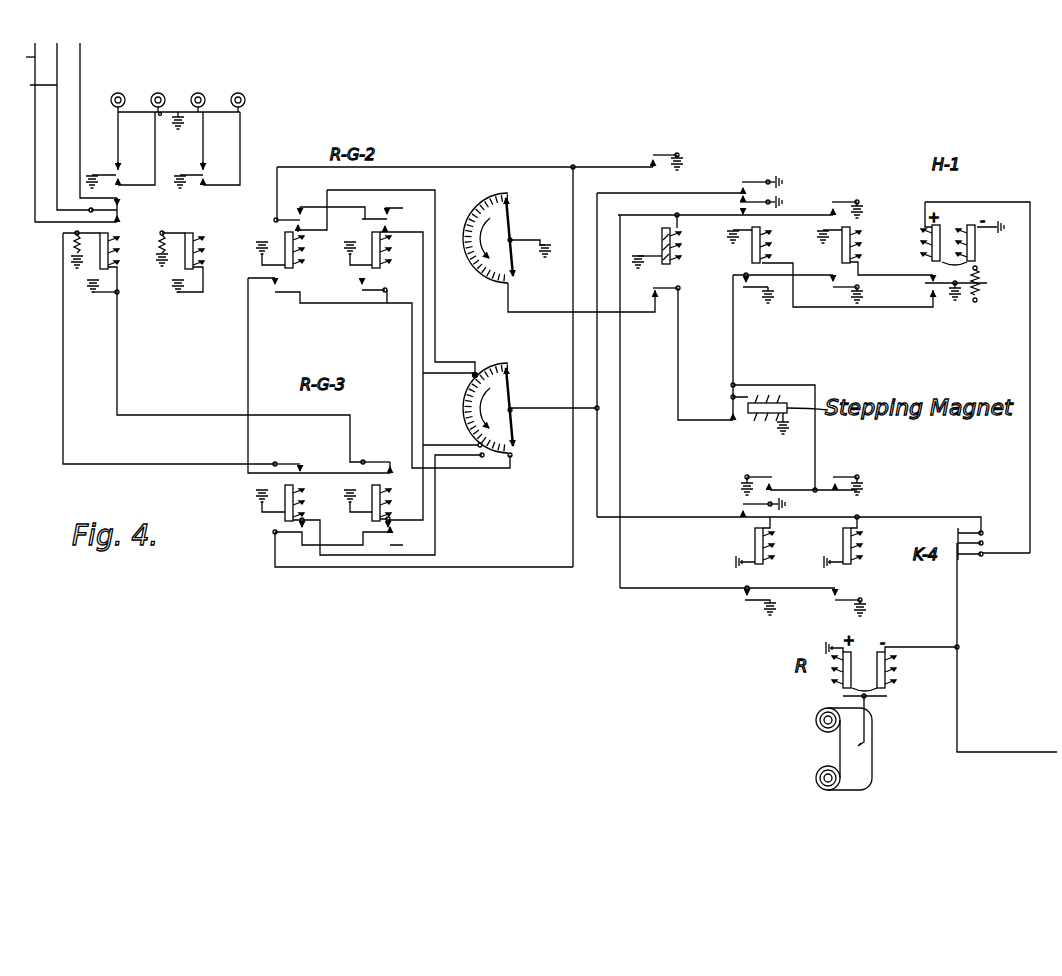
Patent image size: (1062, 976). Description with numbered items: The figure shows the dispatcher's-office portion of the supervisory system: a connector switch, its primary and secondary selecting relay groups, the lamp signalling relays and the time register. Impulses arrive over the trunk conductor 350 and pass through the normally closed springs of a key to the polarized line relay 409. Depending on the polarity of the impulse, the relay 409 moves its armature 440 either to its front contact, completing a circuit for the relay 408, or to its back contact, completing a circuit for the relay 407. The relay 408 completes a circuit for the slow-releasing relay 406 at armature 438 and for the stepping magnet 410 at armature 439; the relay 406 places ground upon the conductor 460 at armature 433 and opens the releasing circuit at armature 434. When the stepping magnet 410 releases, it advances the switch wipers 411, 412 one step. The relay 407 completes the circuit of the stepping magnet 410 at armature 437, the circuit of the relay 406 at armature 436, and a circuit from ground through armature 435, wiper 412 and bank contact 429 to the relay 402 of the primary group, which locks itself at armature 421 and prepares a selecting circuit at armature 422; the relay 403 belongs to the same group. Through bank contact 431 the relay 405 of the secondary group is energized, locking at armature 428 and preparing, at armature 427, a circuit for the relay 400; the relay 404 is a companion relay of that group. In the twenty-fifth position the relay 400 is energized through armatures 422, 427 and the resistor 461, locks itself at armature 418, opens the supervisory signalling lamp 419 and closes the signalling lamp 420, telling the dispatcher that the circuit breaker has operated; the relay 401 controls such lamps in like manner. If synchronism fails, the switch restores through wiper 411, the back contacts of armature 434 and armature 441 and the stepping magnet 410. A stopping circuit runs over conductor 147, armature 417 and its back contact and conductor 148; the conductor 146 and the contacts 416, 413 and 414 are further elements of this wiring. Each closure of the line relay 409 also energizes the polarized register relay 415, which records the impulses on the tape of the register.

The conductor 146 is at (58, 132).
The conductor 147 is at (47, 127).
The conductor 148 is at (82, 78).
The supervisory signalling lamp 419 is at (128, 88).
The signalling lamp 420 is at (194, 95).
The switch contact 416 is at (93, 173).
The armature 417 is at (118, 211).
The resistor 461 is at (73, 240).
The lamp signalling relay 400 is at (93, 278).
The armature 418 is at (112, 296).
The lamp signalling relay 401 is at (196, 232).
The relay 402 is at (282, 232).
The relay 403 is at (370, 238).
The armature 421 is at (297, 216).
The armature 422 is at (360, 284).
The conductor 460 is at (494, 167).
The switch wiper 411 is at (512, 230).
The switch wiper 412 is at (513, 402).
The bank contact 429 is at (478, 370).
The bank contact 431 is at (478, 446).
The armature 427 is at (363, 468).
The relay 404 is at (283, 516).
The relay 405 is at (372, 516).
The armature 428 is at (378, 545).
The armature 433 is at (665, 148).
The armature 434 is at (670, 288).
The armature 435 is at (760, 181).
The armature 436 is at (772, 202).
The armature 438 is at (845, 202).
The slow-releasing relay 406 is at (672, 258).
The relay 407 is at (766, 254).
The relay 408 is at (852, 254).
The polarized line relay 409 is at (946, 242).
The armature 437 is at (752, 292).
The armature 439 is at (848, 290).
The armature 440 is at (943, 288).
The stepping magnet 410 is at (772, 405).
The armature 441 is at (733, 402).
The relay 413 is at (752, 548).
The relay 414 is at (840, 548).
The register relay 415 is at (852, 655).
The trunk conductor 350 is at (1030, 752).